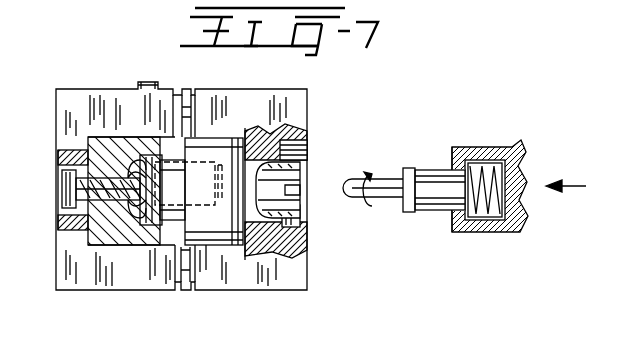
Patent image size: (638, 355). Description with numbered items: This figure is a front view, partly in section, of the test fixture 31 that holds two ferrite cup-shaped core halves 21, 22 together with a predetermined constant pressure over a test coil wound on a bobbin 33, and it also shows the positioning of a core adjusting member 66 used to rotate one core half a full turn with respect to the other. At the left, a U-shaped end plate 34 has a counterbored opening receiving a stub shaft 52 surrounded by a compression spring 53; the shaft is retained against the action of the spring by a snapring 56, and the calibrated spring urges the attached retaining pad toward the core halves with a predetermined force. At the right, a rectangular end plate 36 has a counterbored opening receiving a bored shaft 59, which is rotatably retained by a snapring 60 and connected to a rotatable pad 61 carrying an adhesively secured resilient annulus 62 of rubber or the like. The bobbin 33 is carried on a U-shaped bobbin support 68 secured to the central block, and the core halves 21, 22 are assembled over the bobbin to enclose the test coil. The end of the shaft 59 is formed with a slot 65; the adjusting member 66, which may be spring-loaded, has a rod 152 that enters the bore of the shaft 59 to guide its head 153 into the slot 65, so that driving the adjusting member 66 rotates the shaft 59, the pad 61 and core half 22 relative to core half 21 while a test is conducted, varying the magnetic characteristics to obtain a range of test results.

The test fixture 31 is at (106, 80).
The compression spring 53 is at (103, 142).
The snapring 56 is at (62, 212).
The stub shaft 52 is at (62, 190).
The bobbin 33 is at (186, 166).
The rotatable pad 61 is at (237, 160).
The bored shaft 59 is at (300, 133).
The rectangular end plate 36 is at (290, 238).
The snapring 60 is at (297, 226).
The slot 65 is at (300, 200).
The resilient annulus 62 is at (205, 236).
The U-shaped end plate 34 is at (60, 278).
The U-shaped bobbin support 68 is at (106, 250).
The core half 21 is at (165, 222).
The core half 22 is at (204, 238).
The adjusting member 66 is at (430, 172).
The rod 152 is at (384, 180).
The head 153 is at (406, 202).